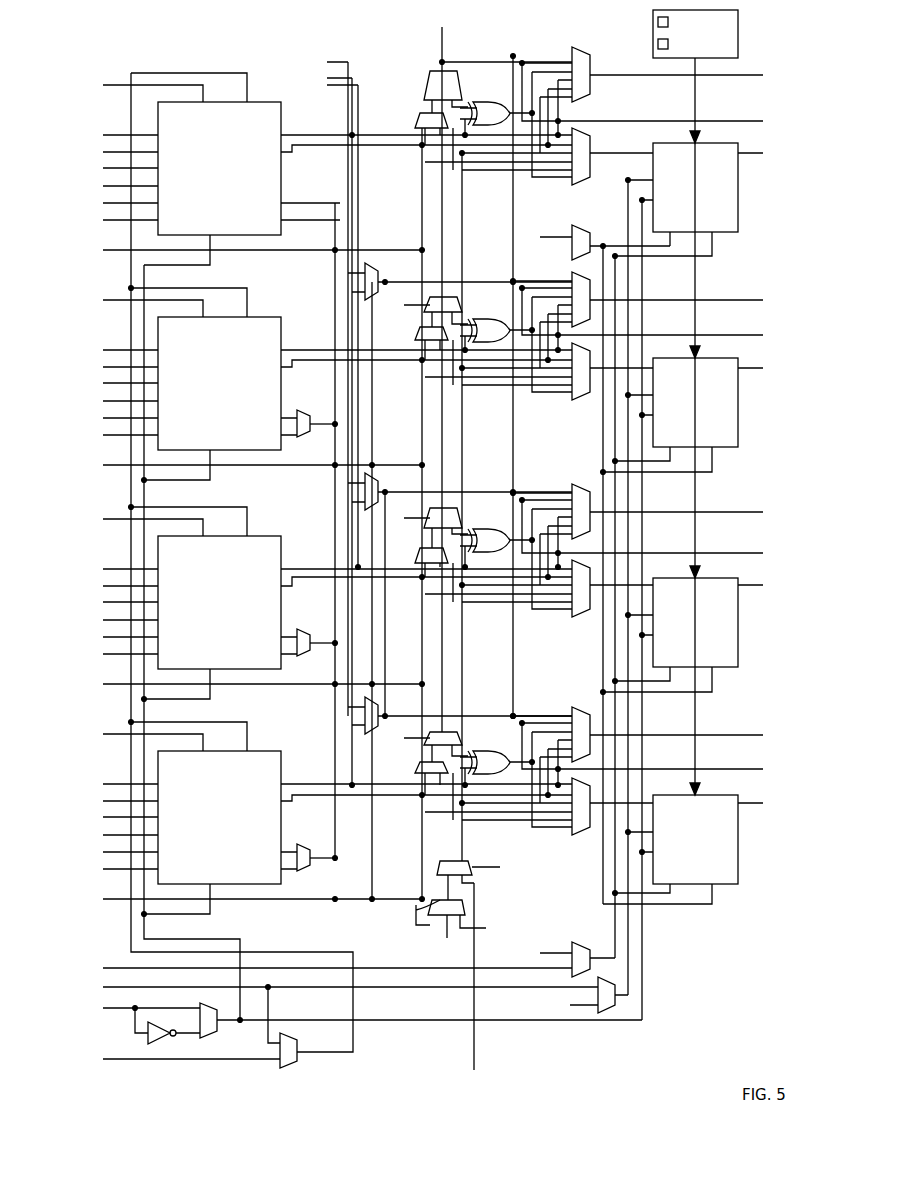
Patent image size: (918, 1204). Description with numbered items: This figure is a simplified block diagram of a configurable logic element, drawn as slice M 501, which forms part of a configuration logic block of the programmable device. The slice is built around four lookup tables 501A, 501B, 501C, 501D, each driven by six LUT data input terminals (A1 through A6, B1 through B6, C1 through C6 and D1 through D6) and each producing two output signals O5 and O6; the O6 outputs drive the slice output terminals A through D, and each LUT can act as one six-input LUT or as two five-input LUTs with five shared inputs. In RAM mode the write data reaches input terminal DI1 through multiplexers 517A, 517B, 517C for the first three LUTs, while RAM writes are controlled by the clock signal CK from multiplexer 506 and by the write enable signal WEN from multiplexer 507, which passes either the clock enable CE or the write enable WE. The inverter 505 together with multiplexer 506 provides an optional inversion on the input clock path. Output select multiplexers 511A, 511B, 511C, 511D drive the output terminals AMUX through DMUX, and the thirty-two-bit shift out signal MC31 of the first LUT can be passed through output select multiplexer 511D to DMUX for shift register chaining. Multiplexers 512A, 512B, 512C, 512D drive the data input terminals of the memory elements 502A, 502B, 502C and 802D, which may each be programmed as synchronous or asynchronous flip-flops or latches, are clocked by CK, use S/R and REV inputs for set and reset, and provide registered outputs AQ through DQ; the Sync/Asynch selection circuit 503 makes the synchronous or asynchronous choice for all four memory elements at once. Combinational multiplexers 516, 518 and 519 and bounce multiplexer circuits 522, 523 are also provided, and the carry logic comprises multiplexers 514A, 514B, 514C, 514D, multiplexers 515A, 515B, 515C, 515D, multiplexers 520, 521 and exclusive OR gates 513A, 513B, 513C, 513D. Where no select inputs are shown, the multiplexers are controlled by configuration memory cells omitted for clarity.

The slice M 501 is at (178, 47).
The lookup table (LUTM) 501A is at (219, 817).
The lookup table (LUTM) 501B is at (219, 602).
The lookup table (LUTM) 501C is at (219, 383).
The lookup table (LUTM) 501D is at (219, 168).
The memory element 502A is at (683, 843).
The memory element 502B is at (682, 630).
The memory element 502C is at (682, 410).
The memory element (flip-flop) D 802D is at (688, 194).
The Sync/Asynch selection circuit 503 is at (653, 46).
The inverter 505 is at (160, 1048).
The multiplexer 506 is at (212, 1032).
The multiplexer 507 is at (286, 1069).
The output select multiplexer 511A is at (572, 717).
The output select multiplexer 511B is at (572, 494).
The output select multiplexer 511C is at (572, 282).
The output select multiplexer 511D is at (593, 84).
The multiplexer 512A is at (580, 833).
The multiplexer 512B is at (580, 617).
The multiplexer 512C is at (580, 395).
The multiplexer 512D is at (592, 153).
The exclusive OR gate 513A is at (487, 753).
The exclusive OR gate 513B is at (487, 531).
The exclusive OR gate 513C is at (487, 320).
The exclusive OR gate 513D is at (490, 96).
The carry logic multiplexer 514A is at (430, 732).
The carry logic multiplexer 514B is at (438, 508).
The carry logic multiplexer 514C is at (430, 297).
The carry logic multiplexer 514D is at (458, 71).
The carry logic multiplexer 515A is at (440, 773).
The carry logic multiplexer 515B is at (440, 563).
The carry logic multiplexer 515C is at (440, 340).
The carry logic multiplexer 515D is at (420, 128).
The combinational multiplexer 516 is at (373, 263).
The multiplexer 517A is at (304, 894).
The multiplexer 517B is at (304, 679).
The multiplexer 517C is at (304, 460).
The combinational multiplexer 518 is at (380, 486).
The combinational multiplexer 519 is at (375, 733).
The carry logic multiplexer 520 is at (470, 901).
The carry logic multiplexer 521 is at (574, 226).
The bounce multiplexer circuit 522 is at (572, 948).
The bounce multiplexer circuit 523 is at (605, 1013).